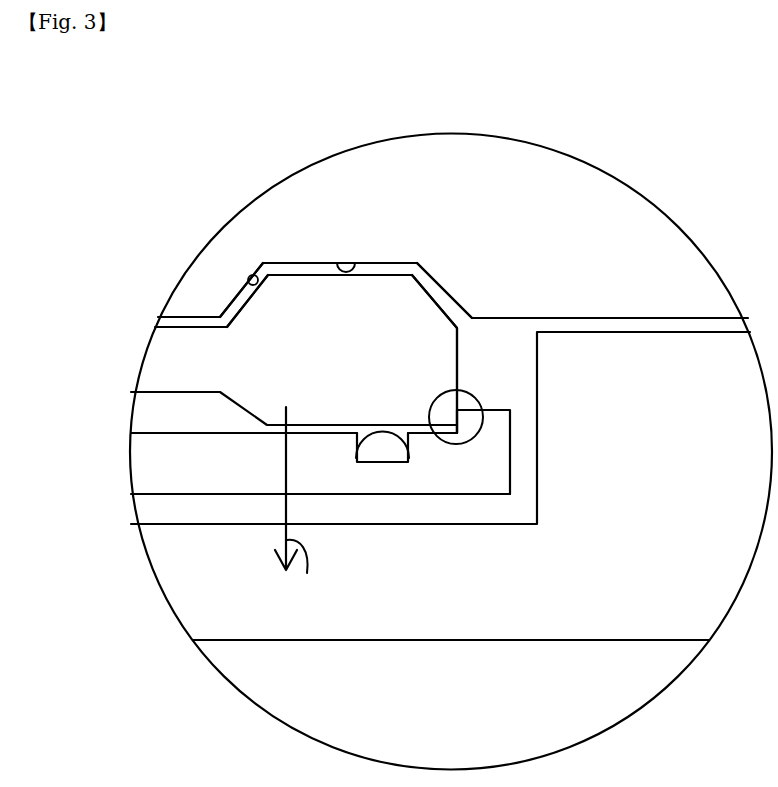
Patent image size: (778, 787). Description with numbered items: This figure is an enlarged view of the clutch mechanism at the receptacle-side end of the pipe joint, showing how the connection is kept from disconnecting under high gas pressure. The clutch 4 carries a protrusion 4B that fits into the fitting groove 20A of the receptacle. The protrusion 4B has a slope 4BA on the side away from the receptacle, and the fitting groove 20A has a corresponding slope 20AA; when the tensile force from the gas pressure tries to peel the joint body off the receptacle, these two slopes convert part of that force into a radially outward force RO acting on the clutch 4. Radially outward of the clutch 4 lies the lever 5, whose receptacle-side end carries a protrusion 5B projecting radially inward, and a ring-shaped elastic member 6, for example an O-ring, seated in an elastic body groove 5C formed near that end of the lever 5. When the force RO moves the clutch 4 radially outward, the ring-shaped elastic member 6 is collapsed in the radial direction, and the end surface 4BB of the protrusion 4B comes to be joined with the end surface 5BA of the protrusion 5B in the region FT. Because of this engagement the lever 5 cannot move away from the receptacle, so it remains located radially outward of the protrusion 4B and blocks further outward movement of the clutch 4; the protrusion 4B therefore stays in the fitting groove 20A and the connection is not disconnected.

The clutch 4 is at (167, 357).
The protrusion 4B is at (415, 305).
The slope 4BA is at (237, 310).
The end surface 4BB is at (456, 368).
The fitting groove 20A is at (358, 262).
The slope 20AA is at (256, 275).
The lever 5 is at (135, 476).
The protrusion 5B is at (498, 470).
The end surface 5BA is at (456, 430).
The elastic body groove 5C is at (362, 452).
The ring-shaped elastic member 6 is at (390, 448).
The region FT is at (473, 397).
The radially outward force RO is at (302, 510).